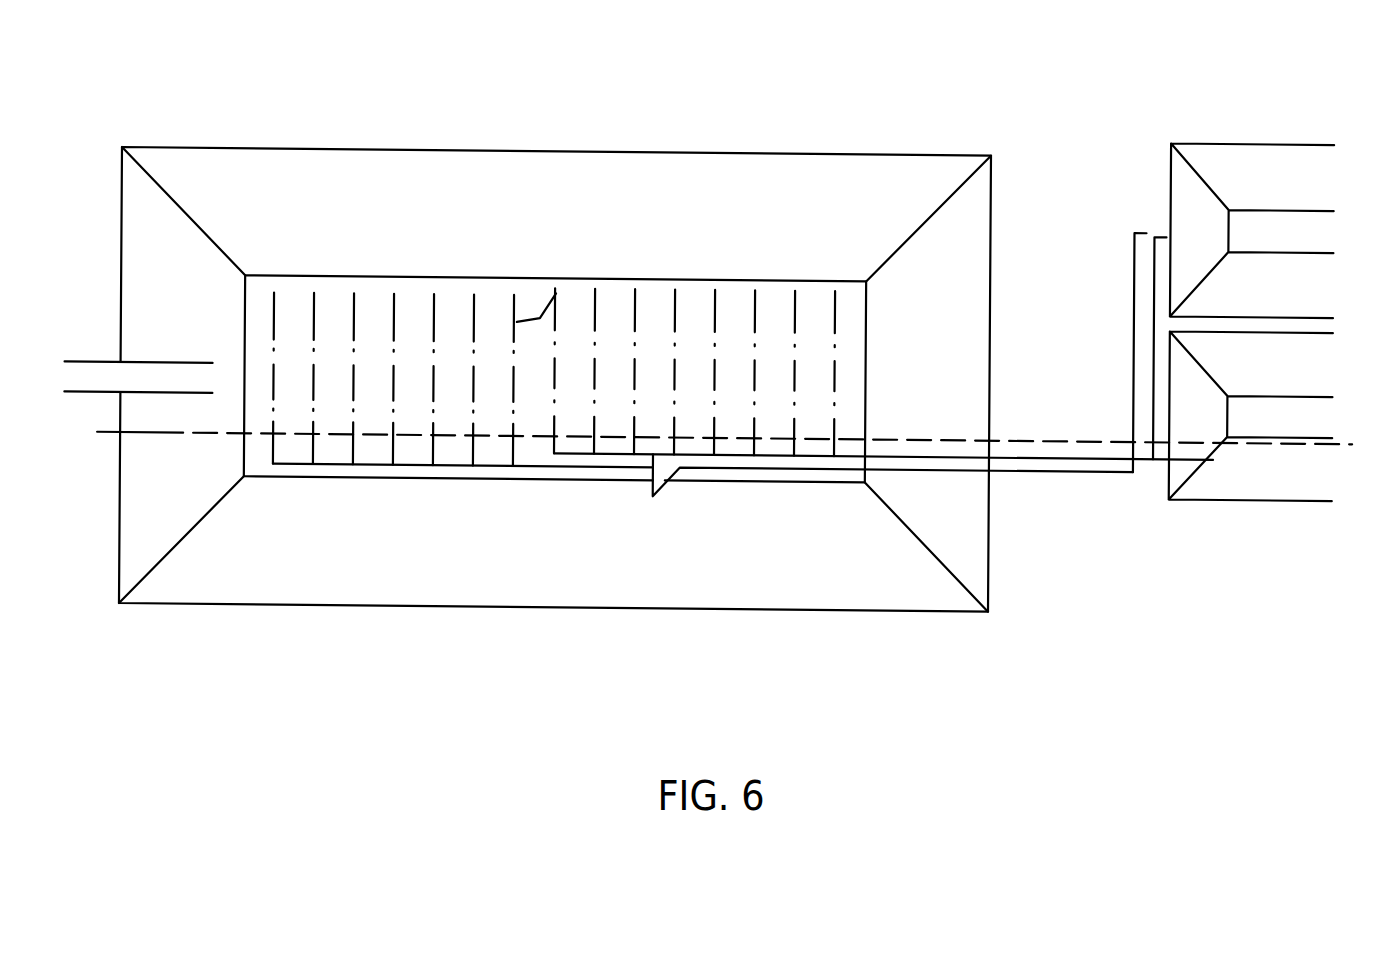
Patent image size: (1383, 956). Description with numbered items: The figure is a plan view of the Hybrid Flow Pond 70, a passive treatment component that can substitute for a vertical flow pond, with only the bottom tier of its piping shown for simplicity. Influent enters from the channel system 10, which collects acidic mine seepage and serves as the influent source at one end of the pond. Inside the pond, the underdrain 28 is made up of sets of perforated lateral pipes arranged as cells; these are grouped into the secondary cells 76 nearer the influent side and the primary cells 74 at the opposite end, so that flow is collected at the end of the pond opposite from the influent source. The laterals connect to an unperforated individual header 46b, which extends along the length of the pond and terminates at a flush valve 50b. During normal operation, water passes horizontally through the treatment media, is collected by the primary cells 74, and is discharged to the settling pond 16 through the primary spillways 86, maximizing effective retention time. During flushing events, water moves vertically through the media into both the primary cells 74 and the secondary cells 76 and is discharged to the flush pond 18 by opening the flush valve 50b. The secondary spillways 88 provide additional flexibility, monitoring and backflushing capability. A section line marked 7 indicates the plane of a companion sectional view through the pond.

The Hybrid Flow Pond 70 is at (661, 147).
The secondary cells 76 is at (275, 271).
The primary cells 74 is at (556, 271).
The underdrain 28 is at (541, 314).
The channel system 10 is at (165, 376).
The section line 7- 7 is at (1354, 412).
The individual header 46b is at (655, 491).
The flush valve 50b is at (1215, 449).
The primary spillways 86 is at (1158, 227).
The secondary spillways 88 is at (1135, 223).
The settling pond 16 is at (1252, 230).
The flush pond 18 is at (1251, 416).